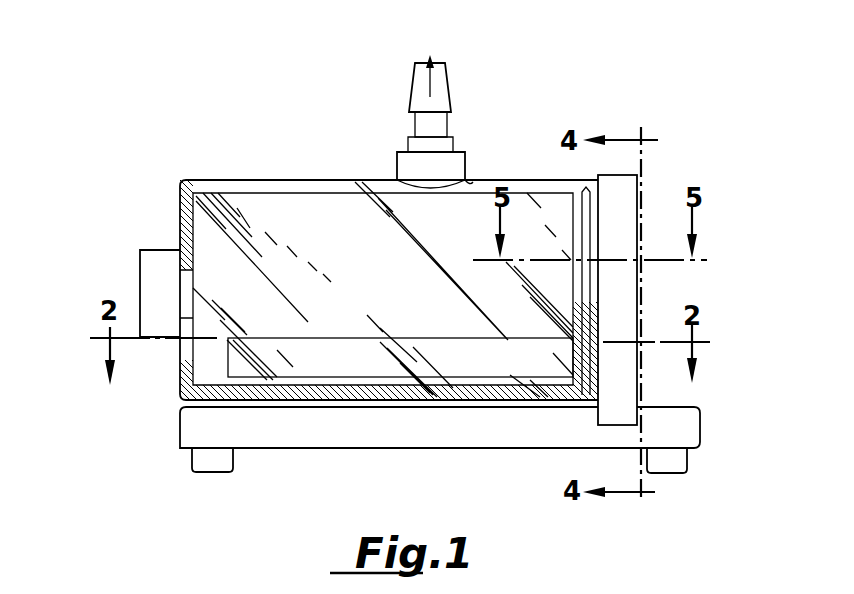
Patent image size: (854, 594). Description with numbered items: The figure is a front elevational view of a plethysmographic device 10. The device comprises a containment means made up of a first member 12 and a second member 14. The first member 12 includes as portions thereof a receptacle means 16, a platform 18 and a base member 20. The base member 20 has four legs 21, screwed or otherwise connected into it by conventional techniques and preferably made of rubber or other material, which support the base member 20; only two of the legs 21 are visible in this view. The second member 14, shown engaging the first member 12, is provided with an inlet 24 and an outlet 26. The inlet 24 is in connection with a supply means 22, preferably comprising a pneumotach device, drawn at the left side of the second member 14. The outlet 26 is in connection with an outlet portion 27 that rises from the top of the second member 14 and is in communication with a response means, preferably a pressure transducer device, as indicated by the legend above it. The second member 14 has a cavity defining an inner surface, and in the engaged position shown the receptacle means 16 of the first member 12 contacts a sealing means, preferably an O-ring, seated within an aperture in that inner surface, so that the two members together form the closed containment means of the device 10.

The plethysmographic device 10 is at (637, 112).
The first member 12 is at (683, 407).
The second member 14 is at (233, 178).
The receptacle means 16 is at (625, 290).
The platform 18 is at (243, 358).
The base member 20 is at (683, 428).
The legs 21 is at (190, 462).
The supply means 22 is at (162, 280).
The inlet 24 is at (183, 282).
The outlet 26 is at (473, 182).
The outlet portion 27 is at (437, 98).